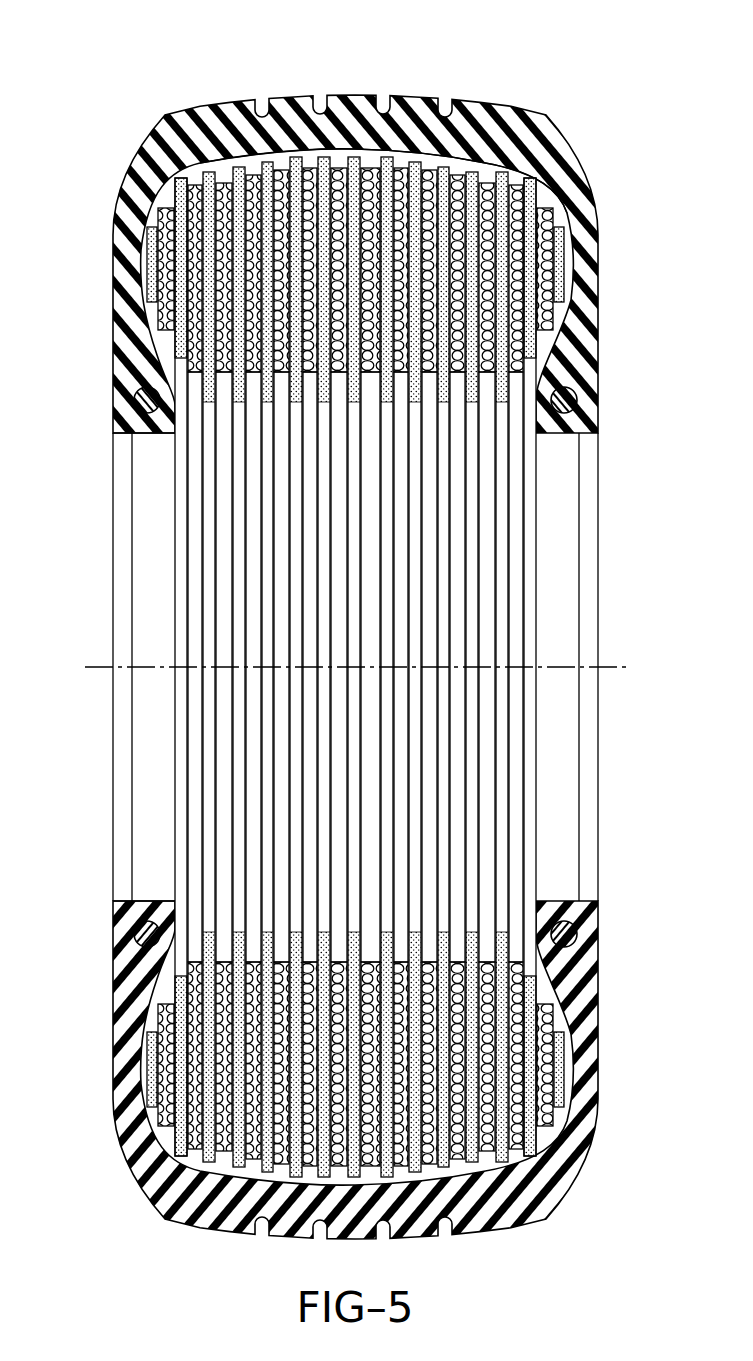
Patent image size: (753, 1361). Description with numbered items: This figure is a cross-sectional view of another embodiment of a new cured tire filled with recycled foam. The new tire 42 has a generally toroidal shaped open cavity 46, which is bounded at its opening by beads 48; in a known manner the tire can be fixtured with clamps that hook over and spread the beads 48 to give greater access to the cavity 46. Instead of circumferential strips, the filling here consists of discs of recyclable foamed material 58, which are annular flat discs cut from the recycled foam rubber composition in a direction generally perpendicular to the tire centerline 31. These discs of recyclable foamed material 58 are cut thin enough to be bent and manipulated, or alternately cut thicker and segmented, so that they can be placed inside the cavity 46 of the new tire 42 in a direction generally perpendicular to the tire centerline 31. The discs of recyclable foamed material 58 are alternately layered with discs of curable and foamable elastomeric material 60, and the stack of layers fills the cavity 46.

The tire centerline 31 is at (548, 667).
The new tire 42 is at (184, 106).
The cavity 46 is at (515, 162).
The beads 48 is at (140, 406).
The discs of recyclable foamed material 58 is at (252, 195).
The discs of curable and foamable elastomeric material 60 is at (343, 200).